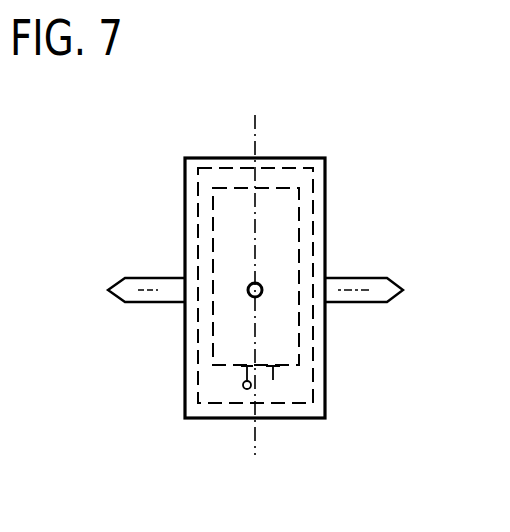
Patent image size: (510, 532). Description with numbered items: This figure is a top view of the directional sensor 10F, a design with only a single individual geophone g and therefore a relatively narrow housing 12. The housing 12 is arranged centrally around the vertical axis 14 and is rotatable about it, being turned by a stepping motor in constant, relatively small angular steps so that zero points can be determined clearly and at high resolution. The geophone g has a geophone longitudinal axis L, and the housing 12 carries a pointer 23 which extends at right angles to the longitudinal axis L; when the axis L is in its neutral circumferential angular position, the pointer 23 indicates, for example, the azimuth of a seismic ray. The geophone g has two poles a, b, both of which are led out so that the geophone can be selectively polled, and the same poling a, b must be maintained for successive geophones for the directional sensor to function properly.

The directional sensor 10F is at (320, 129).
The geophone longitudinal axis L is at (258, 131).
The housing 12 is at (185, 213).
The geophone g is at (283, 207).
The vertical axis 14 is at (260, 286).
The pointer 23 is at (165, 292).
The pole a is at (243, 388).
The pole b is at (273, 380).